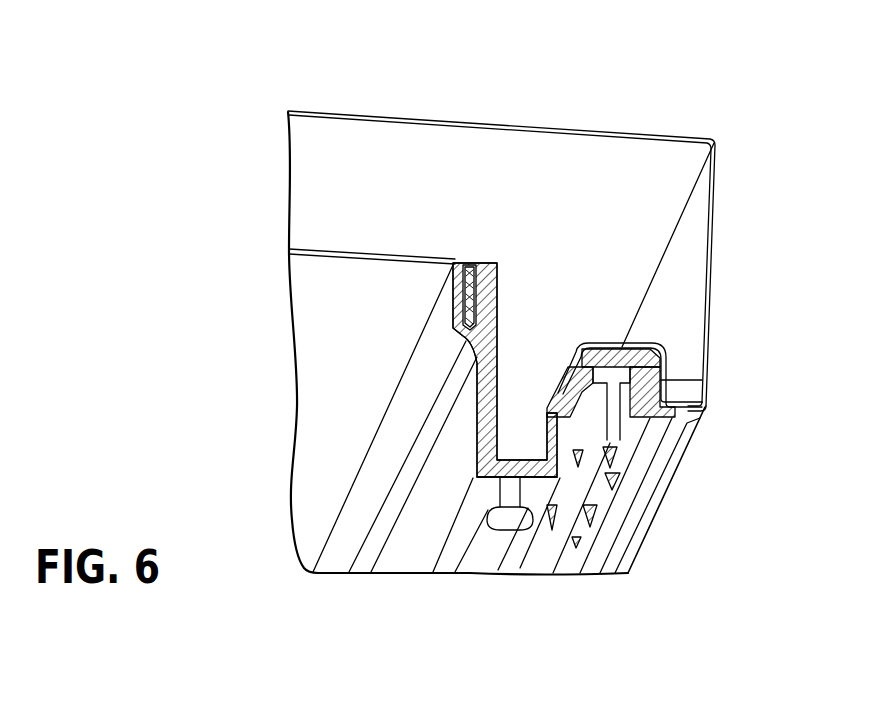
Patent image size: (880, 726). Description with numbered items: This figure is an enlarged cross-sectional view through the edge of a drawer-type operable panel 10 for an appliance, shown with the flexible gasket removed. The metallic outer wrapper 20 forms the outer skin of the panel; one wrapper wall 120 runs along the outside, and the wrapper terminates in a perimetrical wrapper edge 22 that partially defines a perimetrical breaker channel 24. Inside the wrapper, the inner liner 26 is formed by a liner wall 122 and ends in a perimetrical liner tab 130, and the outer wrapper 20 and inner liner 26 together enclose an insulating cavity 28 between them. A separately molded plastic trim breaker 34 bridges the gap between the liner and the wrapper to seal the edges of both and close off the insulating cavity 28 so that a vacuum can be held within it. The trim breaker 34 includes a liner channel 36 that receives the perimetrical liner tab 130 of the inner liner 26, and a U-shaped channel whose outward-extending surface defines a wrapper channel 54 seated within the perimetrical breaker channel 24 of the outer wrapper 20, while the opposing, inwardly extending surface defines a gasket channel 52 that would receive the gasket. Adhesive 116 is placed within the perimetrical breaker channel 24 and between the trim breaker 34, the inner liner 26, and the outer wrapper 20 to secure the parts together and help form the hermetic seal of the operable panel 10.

The operable panel 10 is at (665, 108).
The metallic outer wrapper 20 is at (368, 112).
The perimetrical wrapper edge 22 is at (562, 372).
The perimetrical breaker channel 24 is at (664, 361).
The inner liner 26 is at (340, 254).
The insulating cavity 28 is at (375, 205).
The trim breaker 34 is at (478, 455).
The liner channel 36 is at (468, 292).
The gasket channel 52 is at (608, 388).
The wrapper channel 54 is at (702, 380).
The adhesive 116 is at (480, 265).
The wrapper wall 120 is at (683, 292).
The liner wall 122 is at (357, 330).
The perimetrical liner tab 130 is at (453, 328).